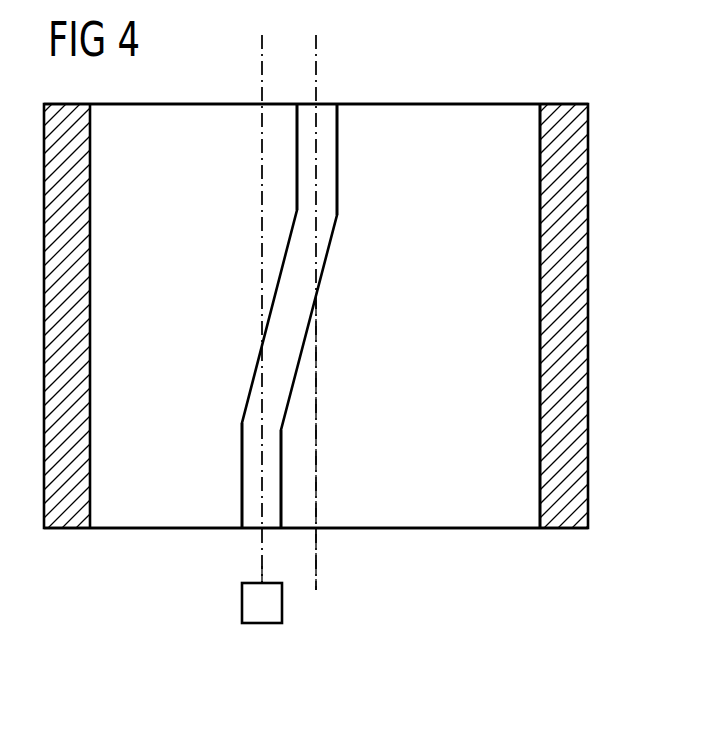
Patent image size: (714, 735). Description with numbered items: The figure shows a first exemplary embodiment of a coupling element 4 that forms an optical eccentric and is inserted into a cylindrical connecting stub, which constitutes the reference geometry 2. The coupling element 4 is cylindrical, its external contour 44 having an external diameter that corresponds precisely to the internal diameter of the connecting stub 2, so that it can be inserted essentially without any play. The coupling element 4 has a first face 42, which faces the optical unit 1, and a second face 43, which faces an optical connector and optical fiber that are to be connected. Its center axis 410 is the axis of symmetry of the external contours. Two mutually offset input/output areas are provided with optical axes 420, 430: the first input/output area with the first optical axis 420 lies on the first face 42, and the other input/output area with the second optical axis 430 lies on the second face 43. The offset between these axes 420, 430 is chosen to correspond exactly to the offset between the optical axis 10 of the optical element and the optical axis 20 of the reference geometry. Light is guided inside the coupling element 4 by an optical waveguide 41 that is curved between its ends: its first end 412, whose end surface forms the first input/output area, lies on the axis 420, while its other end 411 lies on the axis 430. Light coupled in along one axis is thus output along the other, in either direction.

The optical unit 1 is at (283, 603).
The reference geometry 2 is at (575, 350).
The coupling element 4 is at (407, 529).
The optical axis of the optical element 10 is at (262, 210).
The optical axis of the reference geometry 20 is at (318, 450).
The optical waveguide 41 is at (292, 350).
The first face 42 is at (503, 529).
The second face 43 is at (481, 103).
The external contour 44 is at (552, 214).
The center axis 410 is at (318, 450).
The other end of the optical waveguide 411 is at (330, 152).
The first end of the optical waveguide 412 is at (262, 490).
The first optical axis 420 is at (260, 565).
The second optical axis 430 is at (316, 50).